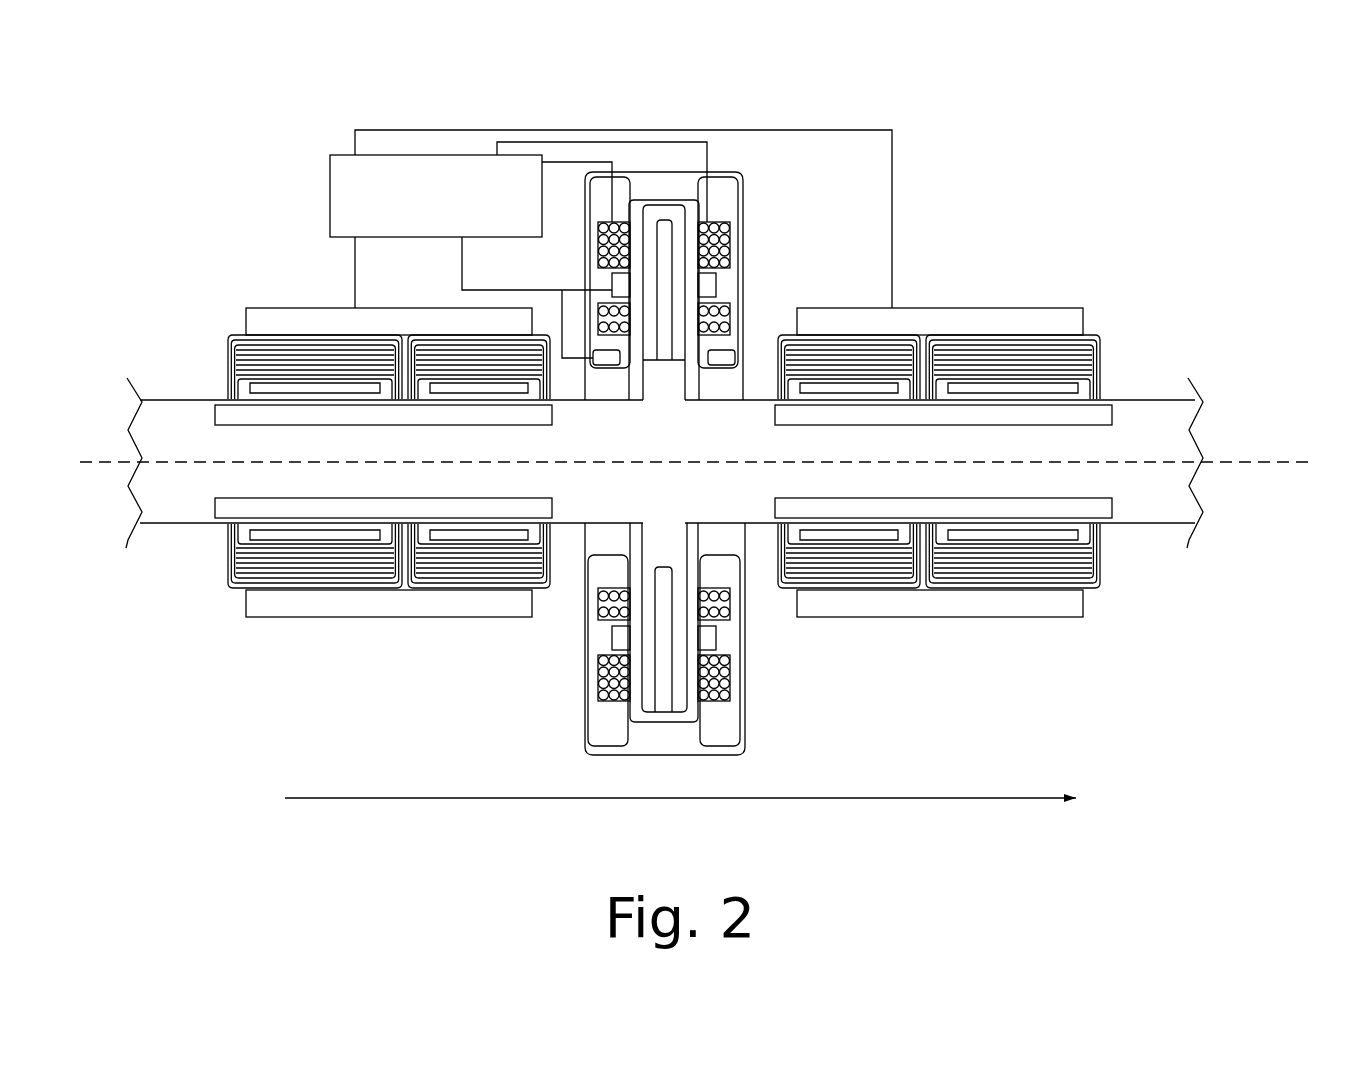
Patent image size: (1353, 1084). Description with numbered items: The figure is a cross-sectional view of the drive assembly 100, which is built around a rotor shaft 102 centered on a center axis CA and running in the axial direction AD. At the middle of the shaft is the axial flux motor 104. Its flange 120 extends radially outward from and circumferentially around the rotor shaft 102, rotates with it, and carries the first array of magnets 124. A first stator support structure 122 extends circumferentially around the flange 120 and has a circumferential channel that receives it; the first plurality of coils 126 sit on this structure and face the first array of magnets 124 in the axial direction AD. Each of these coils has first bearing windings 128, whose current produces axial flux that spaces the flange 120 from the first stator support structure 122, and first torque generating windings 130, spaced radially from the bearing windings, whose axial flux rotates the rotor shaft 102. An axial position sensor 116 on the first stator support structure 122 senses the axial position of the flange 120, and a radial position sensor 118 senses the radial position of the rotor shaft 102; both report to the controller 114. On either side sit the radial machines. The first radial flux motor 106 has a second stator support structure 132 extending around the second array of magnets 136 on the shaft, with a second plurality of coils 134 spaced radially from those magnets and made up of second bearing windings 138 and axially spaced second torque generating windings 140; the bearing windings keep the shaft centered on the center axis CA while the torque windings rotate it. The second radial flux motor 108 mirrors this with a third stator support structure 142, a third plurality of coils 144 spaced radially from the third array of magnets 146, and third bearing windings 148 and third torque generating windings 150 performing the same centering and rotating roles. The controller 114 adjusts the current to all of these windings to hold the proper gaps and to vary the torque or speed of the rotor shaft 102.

The drive assembly 100 is at (1037, 150).
The rotor shaft 102 is at (165, 432).
The axial flux motor 104 is at (757, 215).
The first radial flux motor 106 is at (277, 298).
The second radial flux motor 108 is at (1052, 302).
The controller 114 is at (330, 181).
The axial position sensor 116 is at (612, 286).
The radial position sensor 118 is at (606, 366).
The flange 120 is at (680, 712).
The first stator support structure 122 is at (726, 187).
The first array of magnets 124 is at (687, 640).
The first plurality of coils 126 is at (598, 220).
The first bearing windings 128 is at (732, 249).
The first torque generating windings 130 is at (733, 317).
The second stator support structure 132 is at (281, 608).
The second plurality of coils 134 is at (351, 592).
The second array of magnets 136 is at (432, 424).
The second bearing windings 138 is at (228, 346).
The second torque generating windings 140 is at (425, 347).
The third stator support structure 142 is at (1053, 607).
The third plurality of coils 144 is at (1102, 590).
The third array of magnets 146 is at (945, 424).
The third bearing windings 148 is at (900, 348).
The third torque generating windings 150 is at (1092, 347).
The center axis CA is at (1272, 461).
The axial direction AD is at (457, 802).